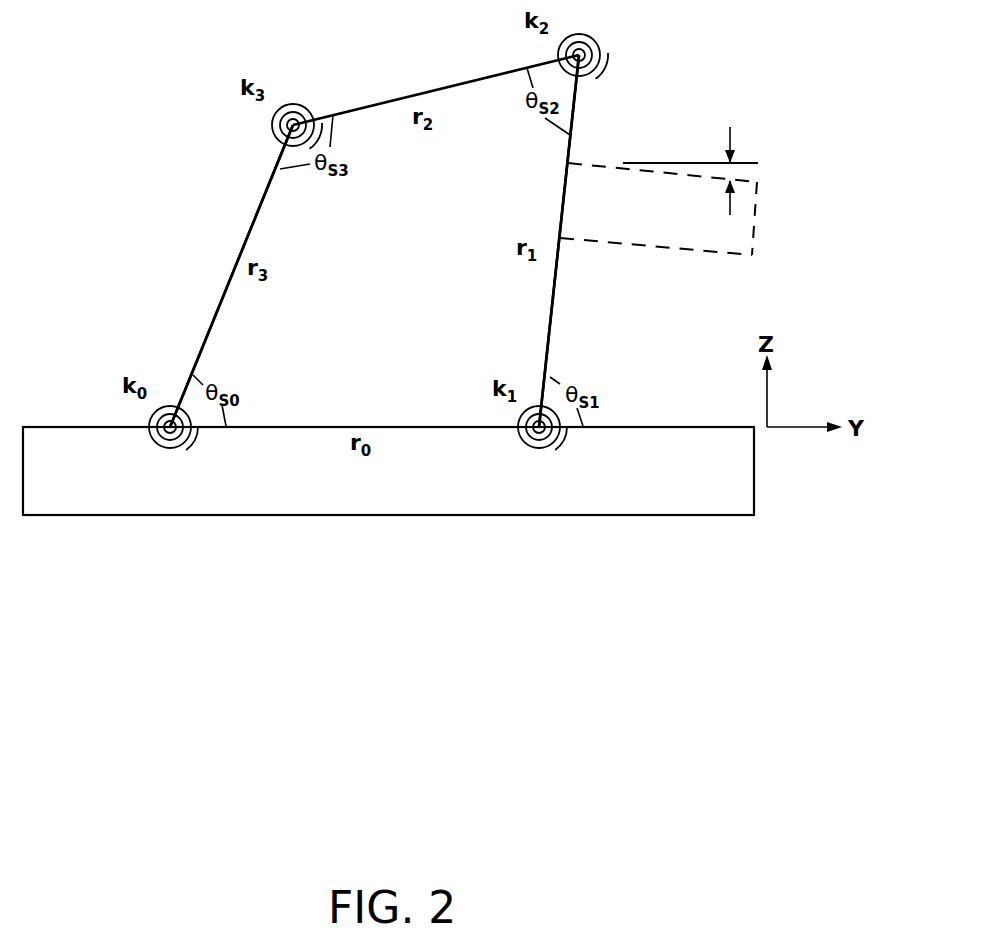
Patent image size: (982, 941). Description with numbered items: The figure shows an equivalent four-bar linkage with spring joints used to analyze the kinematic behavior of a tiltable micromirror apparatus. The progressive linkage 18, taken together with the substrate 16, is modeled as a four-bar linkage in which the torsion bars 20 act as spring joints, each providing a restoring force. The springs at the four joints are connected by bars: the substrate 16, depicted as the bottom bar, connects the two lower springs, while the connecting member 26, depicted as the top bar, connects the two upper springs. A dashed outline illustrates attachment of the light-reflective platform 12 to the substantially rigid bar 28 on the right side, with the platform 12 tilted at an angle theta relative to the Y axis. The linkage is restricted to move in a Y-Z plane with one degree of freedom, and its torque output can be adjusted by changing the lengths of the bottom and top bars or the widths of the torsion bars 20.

The light-reflective platform 12 is at (755, 207).
The substrate 16 is at (78, 490).
The progressive linkage 18 is at (163, 203).
The torsion bars 20 is at (272, 132).
The connecting member 26 is at (371, 105).
The substantially rigid bar 28 is at (218, 307).